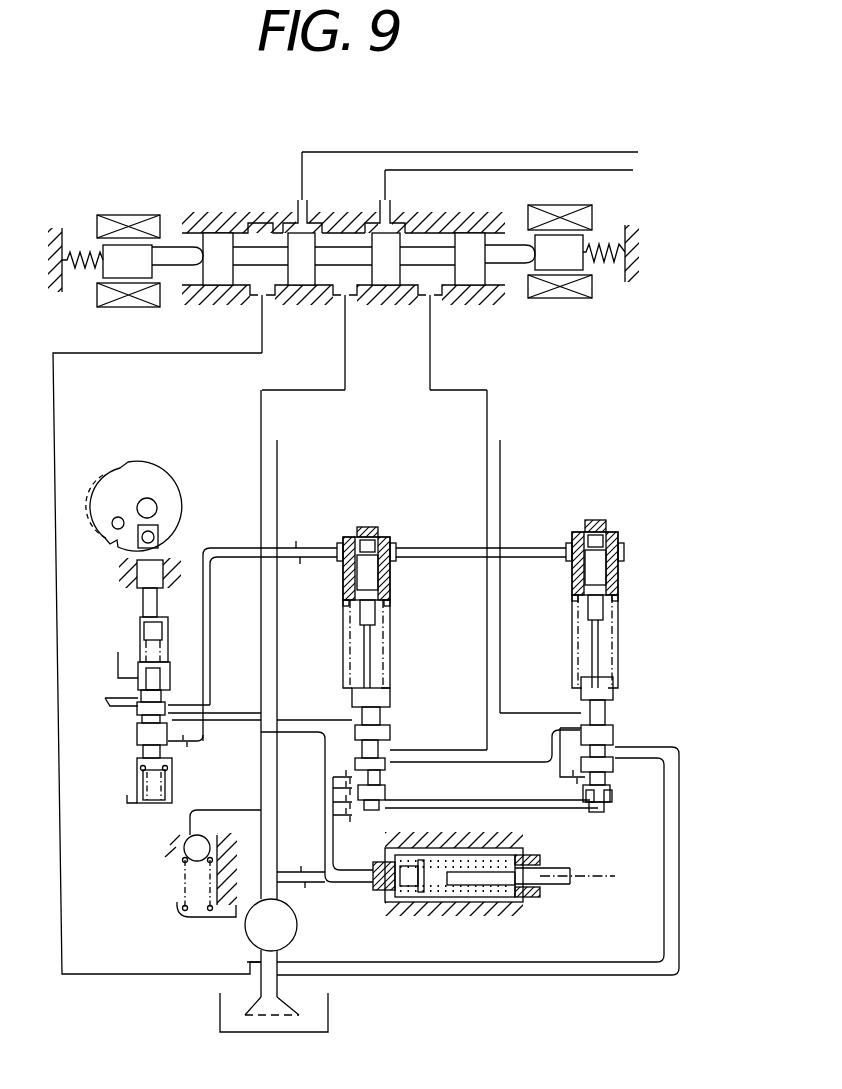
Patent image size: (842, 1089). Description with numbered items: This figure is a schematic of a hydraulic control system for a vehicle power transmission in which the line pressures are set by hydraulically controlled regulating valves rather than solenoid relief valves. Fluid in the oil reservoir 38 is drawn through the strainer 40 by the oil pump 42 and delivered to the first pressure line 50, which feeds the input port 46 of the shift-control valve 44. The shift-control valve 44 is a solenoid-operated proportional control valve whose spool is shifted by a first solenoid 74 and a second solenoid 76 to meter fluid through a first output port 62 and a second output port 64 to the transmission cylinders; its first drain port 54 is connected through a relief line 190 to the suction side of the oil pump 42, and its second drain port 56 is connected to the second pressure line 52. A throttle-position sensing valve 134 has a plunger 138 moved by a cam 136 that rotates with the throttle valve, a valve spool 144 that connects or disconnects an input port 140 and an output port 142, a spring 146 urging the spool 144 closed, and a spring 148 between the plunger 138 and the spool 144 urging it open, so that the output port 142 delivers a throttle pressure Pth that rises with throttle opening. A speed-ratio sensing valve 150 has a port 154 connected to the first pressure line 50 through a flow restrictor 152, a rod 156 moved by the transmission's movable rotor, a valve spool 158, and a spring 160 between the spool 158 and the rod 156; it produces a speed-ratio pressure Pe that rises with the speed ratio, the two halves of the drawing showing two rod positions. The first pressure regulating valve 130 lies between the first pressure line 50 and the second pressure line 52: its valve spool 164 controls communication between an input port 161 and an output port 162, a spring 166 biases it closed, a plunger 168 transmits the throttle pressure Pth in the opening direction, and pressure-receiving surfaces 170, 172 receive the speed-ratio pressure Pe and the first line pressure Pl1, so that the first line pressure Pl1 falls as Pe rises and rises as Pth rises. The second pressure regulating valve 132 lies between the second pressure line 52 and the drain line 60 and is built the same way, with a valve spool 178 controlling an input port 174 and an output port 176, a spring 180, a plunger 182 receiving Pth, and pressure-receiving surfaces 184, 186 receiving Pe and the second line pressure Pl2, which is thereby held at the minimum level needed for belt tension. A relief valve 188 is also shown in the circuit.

The shift-control valve 44 is at (158, 185).
The first solenoid 74 is at (124, 210).
The second solenoid 76 is at (557, 312).
The first output port 62 is at (300, 214).
The second output port 64 is at (384, 214).
The first drain port 54 is at (266, 297).
The input port 46 is at (349, 297).
The second drain port 56 is at (434, 297).
The relief line 190 is at (119, 355).
The first pressure line 50 is at (262, 392).
The second pressure line 52 is at (462, 390).
The first line pressure Pl1 is at (265, 463).
The second line pressure Pl2 is at (490, 463).
The throttle pressure Pth is at (224, 550).
The speed-ratio pressure Pe is at (483, 802).
The throttle-position sensing valve 134 is at (115, 829).
The cam 136 is at (170, 481).
The plunger 138 is at (140, 580).
The spring 148 is at (142, 645).
The output port 142 is at (172, 700).
The input port 140 is at (175, 718).
The valve spool 144 is at (150, 713).
The spring 146 is at (142, 775).
The relief valve 188 is at (172, 878).
The oil pump 42 is at (258, 935).
The strainer 40 is at (256, 1006).
The oil reservoir 38 is at (328, 1003).
The drain line 60 is at (488, 968).
The first pressure regulating valve 130 is at (392, 508).
The plunger 168 is at (370, 578).
The spring 166 is at (383, 669).
The valve spool 164 is at (372, 743).
The input port 161 is at (348, 725).
The output port 162 is at (390, 755).
The pressure-receiving surface 172 is at (390, 780).
The pressure-receiving surface 170 is at (372, 806).
The flow restrictor 152 is at (300, 886).
The speed-ratio sensing valve 150 is at (566, 916).
The port 154 is at (380, 893).
The valve spool 158 is at (392, 867).
The spring 160 is at (462, 893).
The rod 156 is at (572, 883).
The second pressure regulating valve 132 is at (606, 508).
The plunger 182 is at (597, 572).
The spring 180 is at (615, 665).
The valve spool 178 is at (612, 712).
The input port 174 is at (570, 712).
The output port 176 is at (615, 748).
The pressure-receiving surface 184 is at (600, 812).
The pressure-receiving surface 186 is at (612, 800).